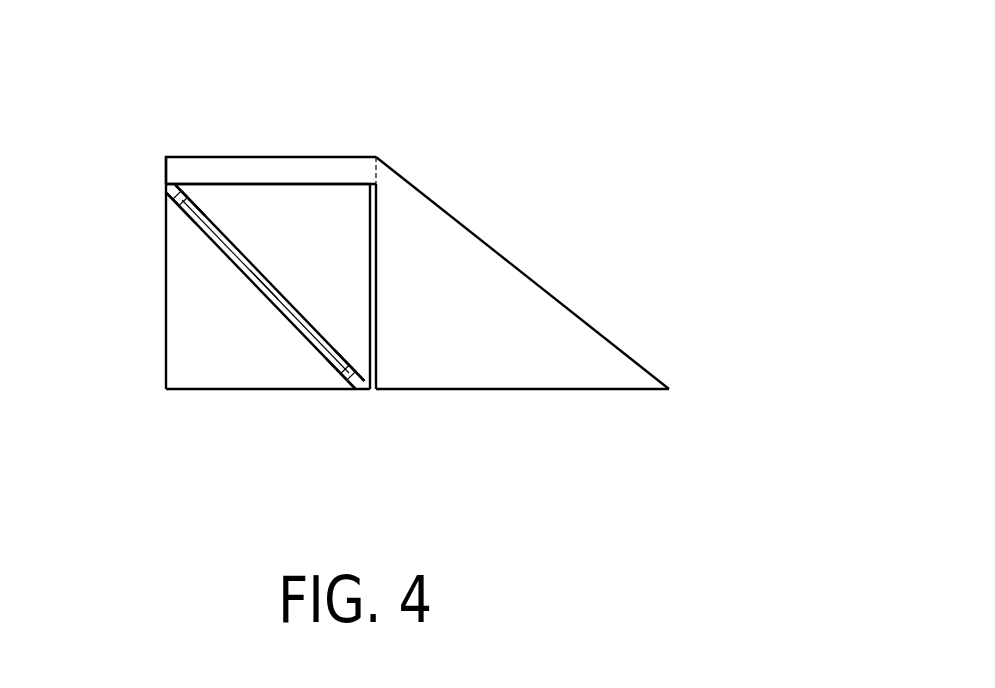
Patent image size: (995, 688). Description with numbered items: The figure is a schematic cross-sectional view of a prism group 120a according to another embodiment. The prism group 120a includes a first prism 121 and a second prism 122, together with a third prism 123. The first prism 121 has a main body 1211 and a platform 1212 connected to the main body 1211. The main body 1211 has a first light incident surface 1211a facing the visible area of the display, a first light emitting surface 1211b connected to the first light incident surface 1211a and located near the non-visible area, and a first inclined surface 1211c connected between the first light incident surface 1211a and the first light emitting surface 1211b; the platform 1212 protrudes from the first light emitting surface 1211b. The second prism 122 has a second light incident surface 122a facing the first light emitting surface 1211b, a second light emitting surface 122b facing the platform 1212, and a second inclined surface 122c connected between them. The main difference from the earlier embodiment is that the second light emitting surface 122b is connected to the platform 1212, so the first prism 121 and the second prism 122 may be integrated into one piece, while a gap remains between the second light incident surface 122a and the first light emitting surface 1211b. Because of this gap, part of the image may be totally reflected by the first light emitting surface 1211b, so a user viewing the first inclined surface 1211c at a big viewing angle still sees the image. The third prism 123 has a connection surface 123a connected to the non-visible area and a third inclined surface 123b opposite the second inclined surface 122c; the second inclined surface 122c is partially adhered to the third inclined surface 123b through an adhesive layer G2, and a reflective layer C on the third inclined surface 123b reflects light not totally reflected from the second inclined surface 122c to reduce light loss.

The prism group 120a is at (101, 71).
The first prism 121 is at (475, 66).
The platform 1212 is at (325, 157).
The main body 1211 is at (437, 245).
The first light incident surface 1211a is at (467, 380).
The first light emitting surface 1211b is at (380, 290).
The first inclined surface 1211c is at (623, 357).
The second prism 122 is at (297, 157).
The second light incident surface 122a is at (342, 390).
The second light emitting surface 122b is at (226, 197).
The second inclined surface 122c is at (366, 352).
The third prism 123 is at (182, 263).
The connection surface 123a is at (190, 376).
The third inclined surface 123b is at (187, 228).
The reflective layer C is at (317, 312).
The adhesive layer G2 is at (168, 194).